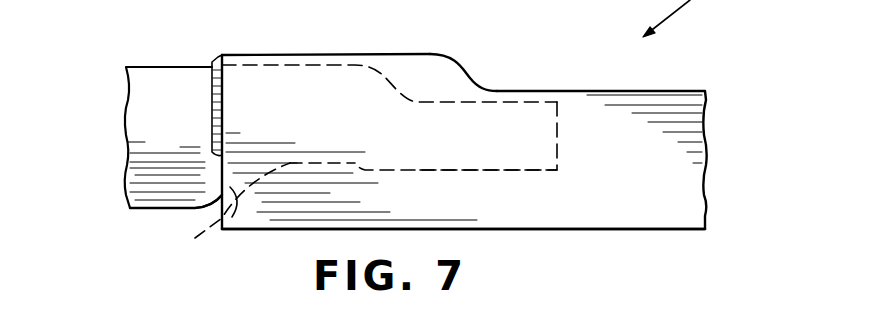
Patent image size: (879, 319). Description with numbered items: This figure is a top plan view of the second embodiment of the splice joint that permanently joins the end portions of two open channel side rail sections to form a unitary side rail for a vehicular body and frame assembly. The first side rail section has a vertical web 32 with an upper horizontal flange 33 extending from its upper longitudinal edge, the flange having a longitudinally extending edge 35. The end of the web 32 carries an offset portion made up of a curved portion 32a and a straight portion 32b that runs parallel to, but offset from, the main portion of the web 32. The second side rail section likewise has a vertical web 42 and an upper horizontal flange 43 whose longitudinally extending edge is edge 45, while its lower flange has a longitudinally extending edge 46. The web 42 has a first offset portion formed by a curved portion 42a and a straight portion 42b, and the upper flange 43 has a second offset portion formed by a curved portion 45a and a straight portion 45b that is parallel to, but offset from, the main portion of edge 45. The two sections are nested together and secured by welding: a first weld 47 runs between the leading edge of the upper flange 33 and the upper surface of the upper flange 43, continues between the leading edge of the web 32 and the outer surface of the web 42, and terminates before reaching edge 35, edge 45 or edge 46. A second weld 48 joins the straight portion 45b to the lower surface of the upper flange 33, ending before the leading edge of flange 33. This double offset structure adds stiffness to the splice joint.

The vertical web 32 is at (656, 90).
The curved portion 32a is at (465, 74).
The straight portion 32b is at (318, 53).
The upper horizontal flange 33 is at (657, 162).
The longitudinally extending edge 35 is at (604, 230).
The vertical web 42 is at (148, 66).
The curved portion 42a is at (397, 89).
The straight portion 42b is at (521, 100).
The upper horizontal flange 43 is at (174, 141).
The longitudinally extending edge 45 is at (143, 209).
The curved portion 45a is at (222, 214).
The straight portion 45b is at (320, 163).
The longitudinally extending edge 46 is at (177, 0).
The first weld 47 is at (213, 88).
The second weld 48 is at (470, 168).